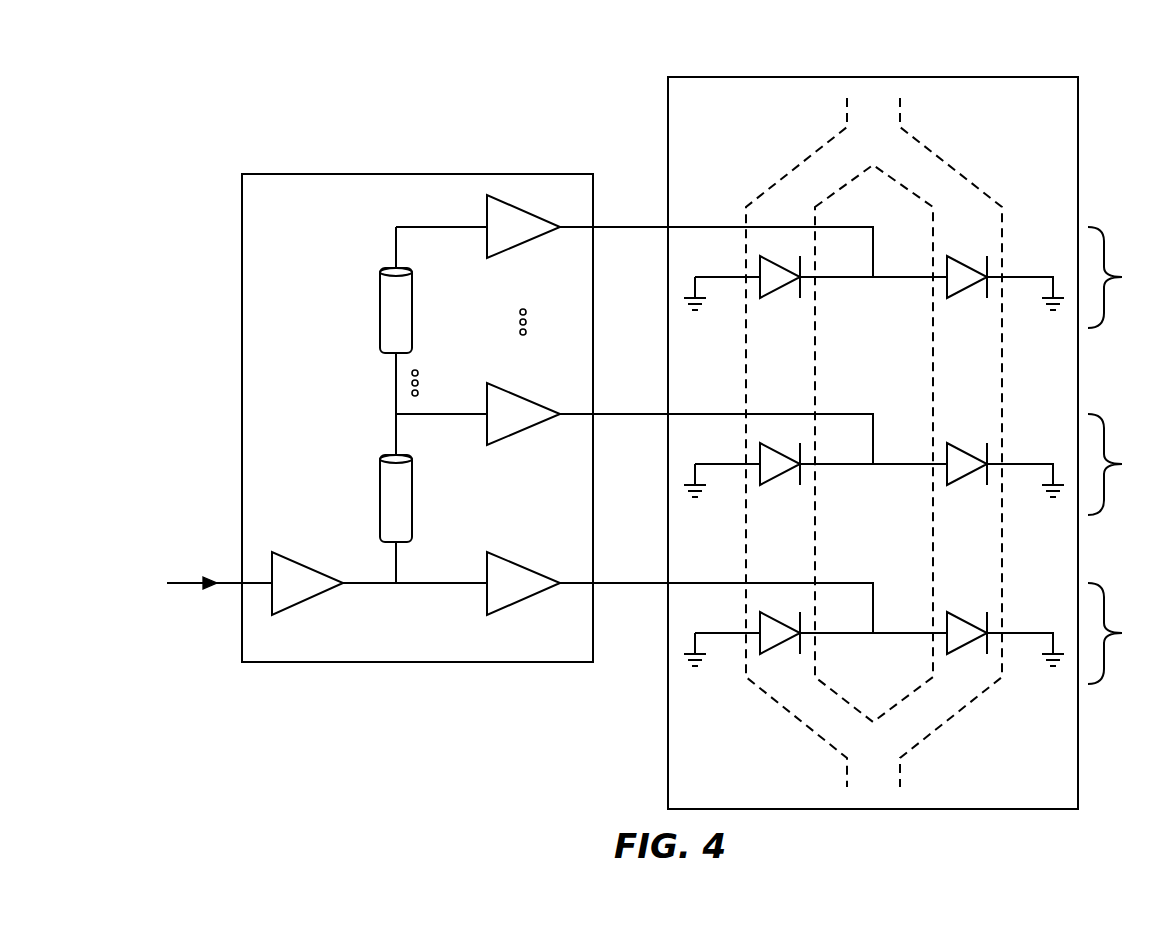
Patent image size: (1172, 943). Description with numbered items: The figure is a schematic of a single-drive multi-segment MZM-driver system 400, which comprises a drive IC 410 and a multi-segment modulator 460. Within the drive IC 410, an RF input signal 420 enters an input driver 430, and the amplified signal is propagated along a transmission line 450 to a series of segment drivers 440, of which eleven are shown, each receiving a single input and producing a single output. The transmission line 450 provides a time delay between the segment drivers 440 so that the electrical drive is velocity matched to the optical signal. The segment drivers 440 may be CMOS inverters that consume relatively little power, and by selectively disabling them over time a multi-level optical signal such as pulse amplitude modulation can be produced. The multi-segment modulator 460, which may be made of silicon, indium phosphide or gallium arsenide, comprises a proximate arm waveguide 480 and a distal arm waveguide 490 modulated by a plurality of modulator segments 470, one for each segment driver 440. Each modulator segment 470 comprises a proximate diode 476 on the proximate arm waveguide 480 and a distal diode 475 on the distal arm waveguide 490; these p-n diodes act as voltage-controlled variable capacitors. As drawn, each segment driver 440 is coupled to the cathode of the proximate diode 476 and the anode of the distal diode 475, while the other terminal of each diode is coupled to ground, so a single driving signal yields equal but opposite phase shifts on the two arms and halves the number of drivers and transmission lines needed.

The single-drive multi-segment MZM-driver system 400 is at (188, 86).
The drive IC 410 is at (242, 192).
The RF input signal 420 is at (185, 588).
The input driver 430 is at (307, 604).
The segment driver 440 is at (485, 239).
The transmission line 450 is at (380, 304).
The multi-segment modulator 460 is at (668, 97).
The modulator segment 470 is at (1127, 455).
The distal diode 475 is at (976, 266).
The proximate diode 476 is at (760, 260).
The proximate arm waveguide 480 is at (792, 170).
The distal arm waveguide 490 is at (954, 172).